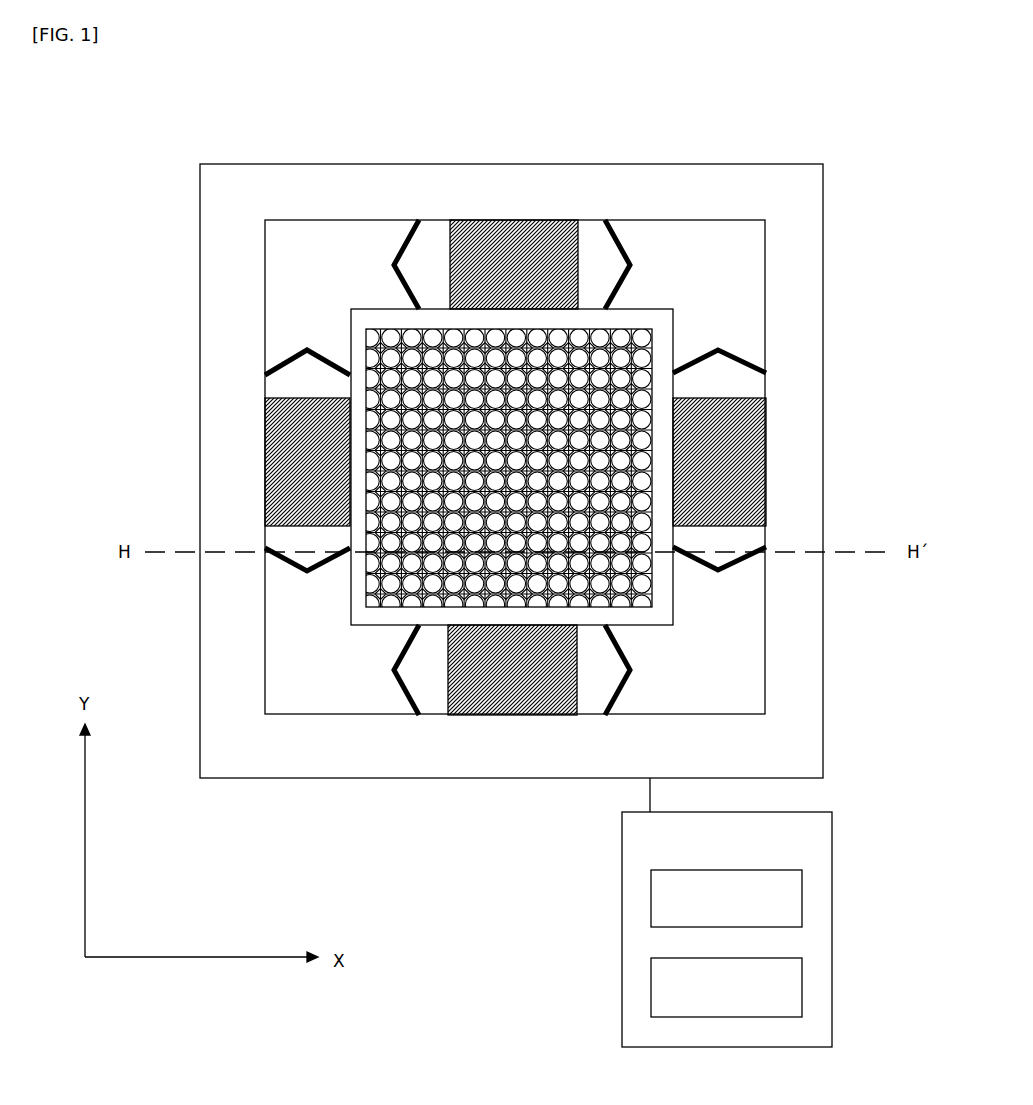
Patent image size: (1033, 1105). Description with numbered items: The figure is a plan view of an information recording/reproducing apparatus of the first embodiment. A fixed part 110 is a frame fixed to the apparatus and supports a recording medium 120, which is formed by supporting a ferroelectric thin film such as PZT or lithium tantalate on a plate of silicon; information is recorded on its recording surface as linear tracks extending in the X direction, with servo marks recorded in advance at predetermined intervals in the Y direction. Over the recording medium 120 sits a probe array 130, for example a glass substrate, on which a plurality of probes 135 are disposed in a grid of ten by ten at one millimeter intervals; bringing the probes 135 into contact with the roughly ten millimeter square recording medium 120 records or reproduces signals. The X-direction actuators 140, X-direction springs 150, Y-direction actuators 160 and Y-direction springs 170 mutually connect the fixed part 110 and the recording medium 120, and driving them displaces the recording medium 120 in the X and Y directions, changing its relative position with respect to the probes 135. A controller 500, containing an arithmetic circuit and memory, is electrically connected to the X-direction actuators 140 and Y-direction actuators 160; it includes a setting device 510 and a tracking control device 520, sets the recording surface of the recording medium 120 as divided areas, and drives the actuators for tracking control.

The fixed part 110 is at (262, 164).
The recording medium 120 is at (672, 616).
The probe array 130 is at (652, 338).
The probes 135 is at (620, 348).
The X-direction actuators 140 is at (287, 493).
The X-direction springs 150 is at (278, 552).
The Y-direction actuators 160 is at (483, 243).
The Y-direction springs 170 is at (420, 243).
The controller 500 is at (832, 842).
The setting device 510 is at (651, 895).
The tracking control device 520 is at (651, 985).